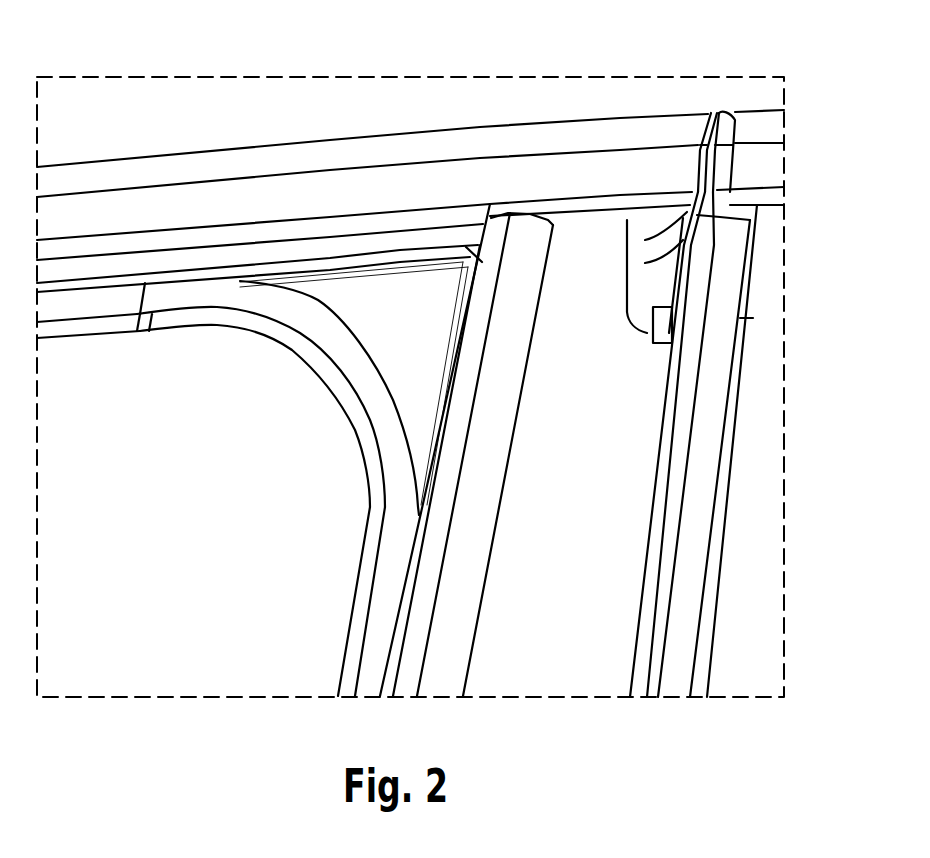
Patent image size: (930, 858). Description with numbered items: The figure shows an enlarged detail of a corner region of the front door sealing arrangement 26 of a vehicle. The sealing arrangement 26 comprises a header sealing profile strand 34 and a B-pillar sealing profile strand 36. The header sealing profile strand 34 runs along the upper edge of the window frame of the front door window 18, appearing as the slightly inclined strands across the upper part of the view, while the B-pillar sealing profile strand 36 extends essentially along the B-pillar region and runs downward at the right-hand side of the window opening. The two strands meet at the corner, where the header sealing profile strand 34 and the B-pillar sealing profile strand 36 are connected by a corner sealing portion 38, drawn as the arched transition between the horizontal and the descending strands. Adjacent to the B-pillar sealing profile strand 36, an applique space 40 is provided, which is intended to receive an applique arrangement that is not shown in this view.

The front door sealing arrangement 26 is at (163, 108).
The front door window 18 is at (83, 621).
The header sealing profile strand 34 is at (91, 352).
The corner sealing portion 38 is at (293, 386).
The B-pillar sealing profile strand 36 is at (327, 642).
The applique space 40 is at (576, 622).